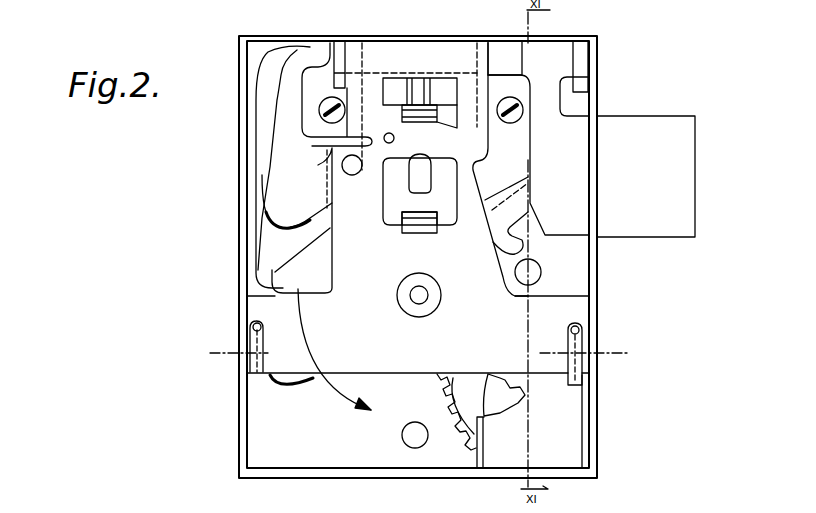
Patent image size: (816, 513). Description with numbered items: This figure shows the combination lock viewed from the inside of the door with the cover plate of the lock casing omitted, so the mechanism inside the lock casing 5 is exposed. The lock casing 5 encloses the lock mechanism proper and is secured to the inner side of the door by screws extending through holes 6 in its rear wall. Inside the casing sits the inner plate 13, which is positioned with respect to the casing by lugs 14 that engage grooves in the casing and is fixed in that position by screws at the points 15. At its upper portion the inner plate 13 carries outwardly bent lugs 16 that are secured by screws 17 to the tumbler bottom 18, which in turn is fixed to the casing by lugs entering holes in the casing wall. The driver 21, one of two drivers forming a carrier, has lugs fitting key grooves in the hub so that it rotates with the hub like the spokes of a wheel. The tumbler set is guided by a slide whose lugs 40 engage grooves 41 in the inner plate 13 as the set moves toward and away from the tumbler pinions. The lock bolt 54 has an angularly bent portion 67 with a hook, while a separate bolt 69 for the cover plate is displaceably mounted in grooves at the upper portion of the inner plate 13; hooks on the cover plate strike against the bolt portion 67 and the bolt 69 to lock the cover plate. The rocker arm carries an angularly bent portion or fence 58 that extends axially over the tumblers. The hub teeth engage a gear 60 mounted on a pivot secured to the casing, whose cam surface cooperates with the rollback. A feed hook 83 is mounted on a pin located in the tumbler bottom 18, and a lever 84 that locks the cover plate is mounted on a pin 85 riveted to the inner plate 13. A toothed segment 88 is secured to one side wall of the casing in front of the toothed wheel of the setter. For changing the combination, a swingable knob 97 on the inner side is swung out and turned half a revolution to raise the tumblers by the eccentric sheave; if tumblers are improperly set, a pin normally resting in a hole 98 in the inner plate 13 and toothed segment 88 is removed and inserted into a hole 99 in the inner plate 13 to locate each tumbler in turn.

The lock casing 5 is at (240, 402).
The holes 6 is at (542, 268).
The inner plate 13 is at (393, 375).
The lugs 14 is at (240, 307).
The points 15 is at (246, 356).
The outwardly bent lugs 16 is at (318, 95).
The screws 17 is at (325, 104).
The tumbler bottom 18 is at (263, 75).
The driver 21 is at (273, 278).
The lugs 40 is at (458, 77).
The grooves 41 is at (393, 105).
The lock bolt 54 is at (662, 142).
The angularly bent portion 58 is at (417, 80).
The gear 60 is at (453, 437).
The angularly bent portion 67 is at (580, 55).
The bolt 69 is at (340, 53).
The feed hook 83 is at (260, 242).
The lever 84 is at (262, 198).
The pin 85 is at (342, 165).
The toothed segment 88 is at (482, 445).
The swingable knob 97 is at (330, 205).
The hole 98 is at (582, 328).
The hole 99 is at (317, 145).